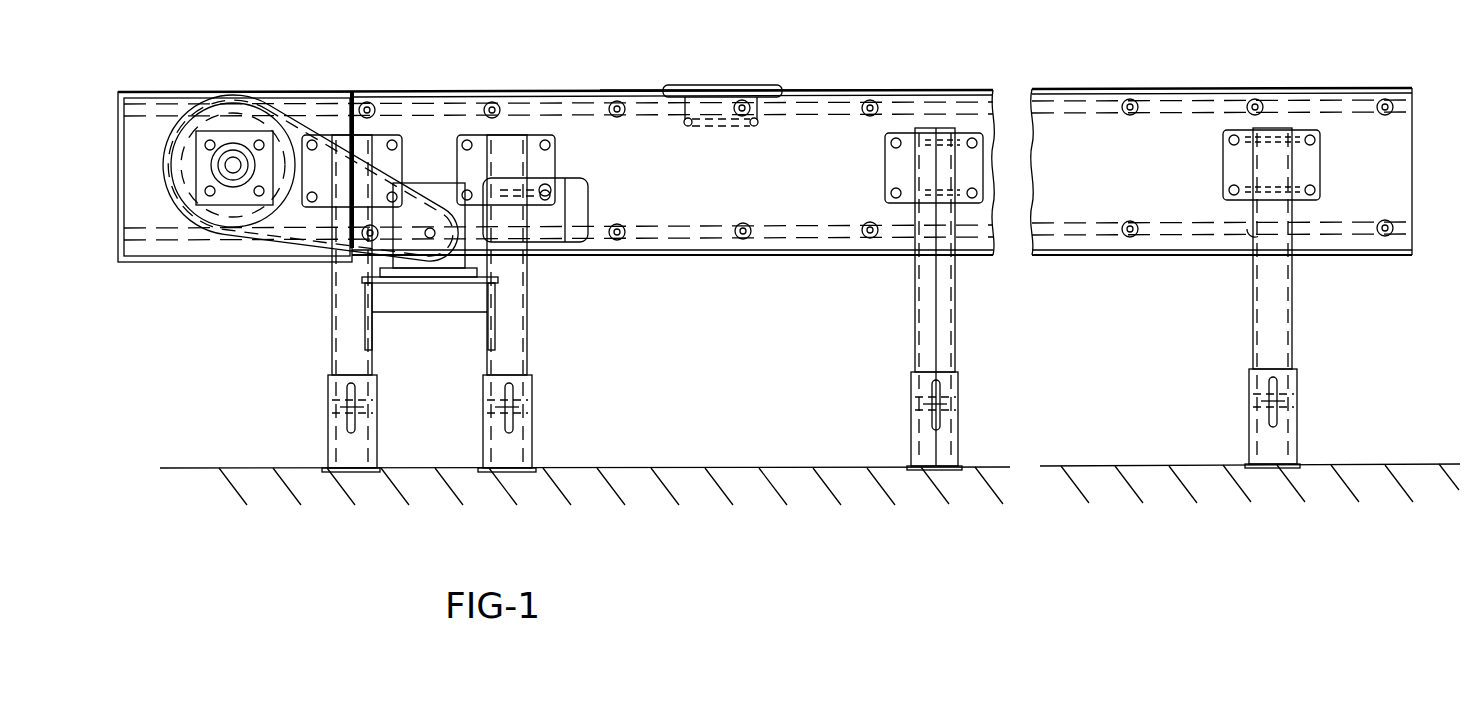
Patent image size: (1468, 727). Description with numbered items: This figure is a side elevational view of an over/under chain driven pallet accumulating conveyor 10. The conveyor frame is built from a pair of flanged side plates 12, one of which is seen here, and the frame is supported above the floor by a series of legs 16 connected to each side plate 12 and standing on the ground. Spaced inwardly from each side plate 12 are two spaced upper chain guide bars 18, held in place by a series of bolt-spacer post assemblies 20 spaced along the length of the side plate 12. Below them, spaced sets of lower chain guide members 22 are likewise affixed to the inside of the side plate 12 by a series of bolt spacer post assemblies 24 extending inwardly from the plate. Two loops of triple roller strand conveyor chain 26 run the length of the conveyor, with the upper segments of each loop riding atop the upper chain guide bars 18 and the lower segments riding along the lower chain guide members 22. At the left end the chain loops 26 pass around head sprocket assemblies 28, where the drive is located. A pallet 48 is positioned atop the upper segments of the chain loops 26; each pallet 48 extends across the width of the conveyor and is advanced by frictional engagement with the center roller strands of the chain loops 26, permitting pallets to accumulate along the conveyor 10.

The conveyor 10 is at (790, 20).
The flanged side plate 12 is at (822, 192).
The leg 16 is at (332, 332).
The upper chain guide bar 18 is at (568, 108).
The bolt-spacer post assembly 20 is at (487, 101).
The lower chain guide member 22 is at (702, 238).
The bolt spacer post assembly 24 is at (617, 242).
The triple roller strand conveyor chain loop 26 is at (300, 92).
The head sprocket assembly 28 is at (290, 212).
The pallet 48 is at (686, 86).